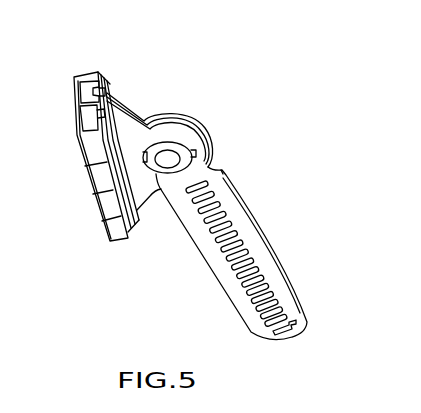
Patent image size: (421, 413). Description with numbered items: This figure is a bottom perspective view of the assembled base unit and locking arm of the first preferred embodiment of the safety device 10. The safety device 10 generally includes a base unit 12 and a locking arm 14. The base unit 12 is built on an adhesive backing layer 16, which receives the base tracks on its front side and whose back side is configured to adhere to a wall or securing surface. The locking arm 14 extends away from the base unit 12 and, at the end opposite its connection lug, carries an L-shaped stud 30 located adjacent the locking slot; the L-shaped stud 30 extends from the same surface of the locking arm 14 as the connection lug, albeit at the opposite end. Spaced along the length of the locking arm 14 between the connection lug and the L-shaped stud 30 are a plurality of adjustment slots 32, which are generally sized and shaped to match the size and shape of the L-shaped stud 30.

The safety device 10 is at (216, 75).
The base unit 12 is at (61, 74).
The locking arm 14 is at (269, 245).
The adhesive backing layer 16 is at (80, 127).
The L-shaped stud 30 is at (288, 334).
The adjustment slots 32 is at (227, 258).